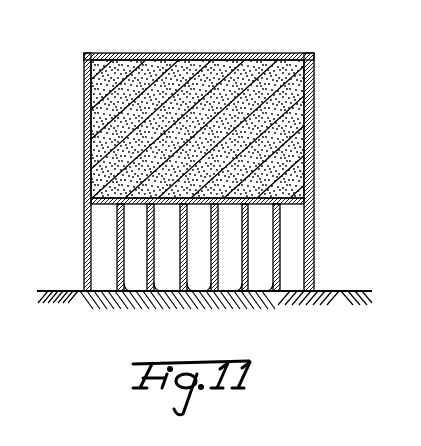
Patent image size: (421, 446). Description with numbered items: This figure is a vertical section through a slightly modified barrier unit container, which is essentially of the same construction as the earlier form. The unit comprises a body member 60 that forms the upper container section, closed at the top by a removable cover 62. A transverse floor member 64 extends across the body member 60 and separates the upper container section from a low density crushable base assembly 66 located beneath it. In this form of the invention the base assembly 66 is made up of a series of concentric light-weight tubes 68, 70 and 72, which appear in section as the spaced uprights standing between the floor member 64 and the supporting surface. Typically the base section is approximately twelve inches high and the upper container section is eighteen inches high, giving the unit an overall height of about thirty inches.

The body member 60 is at (86, 108).
The removable cover 62 is at (268, 55).
The transverse floor member 64 is at (298, 189).
The low density crushable base assembly 66 is at (321, 242).
The light-weight tube 68 is at (122, 292).
The light-weight tube 70 is at (234, 291).
The light-weight tube 72 is at (207, 292).